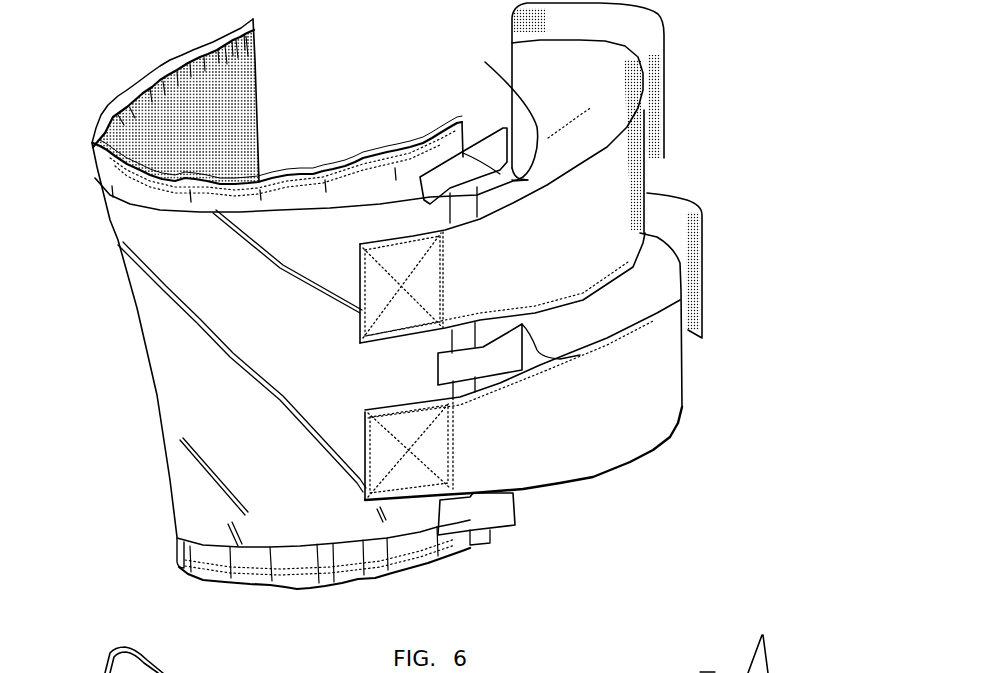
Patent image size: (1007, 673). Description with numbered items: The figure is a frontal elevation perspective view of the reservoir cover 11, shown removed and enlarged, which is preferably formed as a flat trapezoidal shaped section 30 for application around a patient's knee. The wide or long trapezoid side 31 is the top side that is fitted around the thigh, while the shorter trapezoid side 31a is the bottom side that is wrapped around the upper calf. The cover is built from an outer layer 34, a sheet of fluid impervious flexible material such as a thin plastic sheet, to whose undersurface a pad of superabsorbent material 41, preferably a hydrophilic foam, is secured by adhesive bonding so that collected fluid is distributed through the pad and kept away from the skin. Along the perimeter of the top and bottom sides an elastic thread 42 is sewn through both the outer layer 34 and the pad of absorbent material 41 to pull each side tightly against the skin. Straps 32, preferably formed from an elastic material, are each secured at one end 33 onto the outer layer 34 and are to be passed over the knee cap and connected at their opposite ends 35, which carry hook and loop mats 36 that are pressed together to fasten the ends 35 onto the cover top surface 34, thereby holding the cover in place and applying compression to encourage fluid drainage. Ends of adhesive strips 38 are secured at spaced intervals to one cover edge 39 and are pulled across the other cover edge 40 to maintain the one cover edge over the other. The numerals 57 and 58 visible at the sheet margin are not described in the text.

The reservoir cover 11 is at (133, 349).
The flat trapezoidal shaped section 30 is at (192, 494).
The wide or long trapezoid side 31 is at (323, 167).
The shorter trapezoid side 31a is at (299, 580).
The straps 32 is at (622, 173).
The one end of strap 33 is at (360, 267).
The outer layer 34 is at (226, 300).
The opposite strap ends 35 is at (667, 68).
The hook and loop mats 36 is at (377, 298).
The adhesive strips 38 is at (480, 160).
The one cover edge 39 is at (500, 112).
The other cover edge 40 is at (260, 78).
The pad of superabsorbent material 41 is at (192, 110).
The elastic thread 42 is at (130, 93).
The element of adjacent figure 57 is at (787, 654).
The element of adjacent figure 58 is at (685, 671).